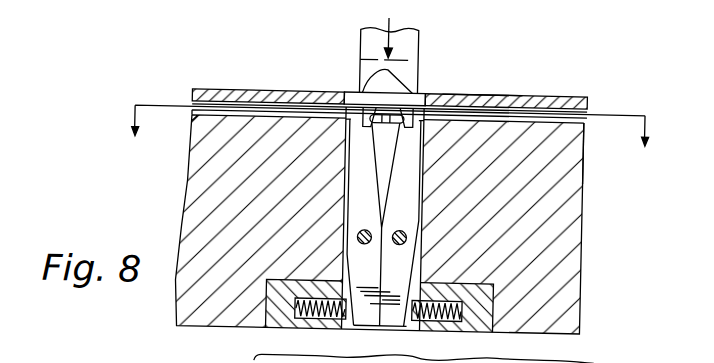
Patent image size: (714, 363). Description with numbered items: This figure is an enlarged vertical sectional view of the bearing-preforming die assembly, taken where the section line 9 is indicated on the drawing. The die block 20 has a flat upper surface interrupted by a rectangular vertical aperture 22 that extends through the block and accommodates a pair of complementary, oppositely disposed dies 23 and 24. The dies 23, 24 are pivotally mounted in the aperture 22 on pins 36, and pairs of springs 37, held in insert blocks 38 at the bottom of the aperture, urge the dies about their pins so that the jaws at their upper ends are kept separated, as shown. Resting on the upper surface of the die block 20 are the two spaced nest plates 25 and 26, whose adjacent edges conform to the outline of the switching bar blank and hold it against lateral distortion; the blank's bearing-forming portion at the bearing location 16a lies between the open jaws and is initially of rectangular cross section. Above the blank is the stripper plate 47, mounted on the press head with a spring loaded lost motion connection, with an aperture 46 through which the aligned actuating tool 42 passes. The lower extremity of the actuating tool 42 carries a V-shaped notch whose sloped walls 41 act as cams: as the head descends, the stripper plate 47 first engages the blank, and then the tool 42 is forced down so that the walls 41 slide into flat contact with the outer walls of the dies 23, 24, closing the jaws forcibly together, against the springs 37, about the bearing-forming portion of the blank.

The section line 9- 9 is at (387, 141).
The die block 20 is at (584, 251).
The vertical apertures 22 is at (418, 274).
The die 23 is at (347, 153).
The die 24 is at (478, 92).
The nest plate 25 is at (191, 117).
The nest plate 26 is at (582, 120).
The pins 36 is at (364, 246).
The springs 37 is at (435, 317).
The insert blocks 38 is at (482, 326).
The walls of V-shaped notch 41 is at (384, 113).
The actuating tool 42 is at (364, 43).
The apertures in stripper plate 46 is at (346, 96).
The stripper plate 47 is at (197, 92).
The bearing location 16a is at (416, 156).